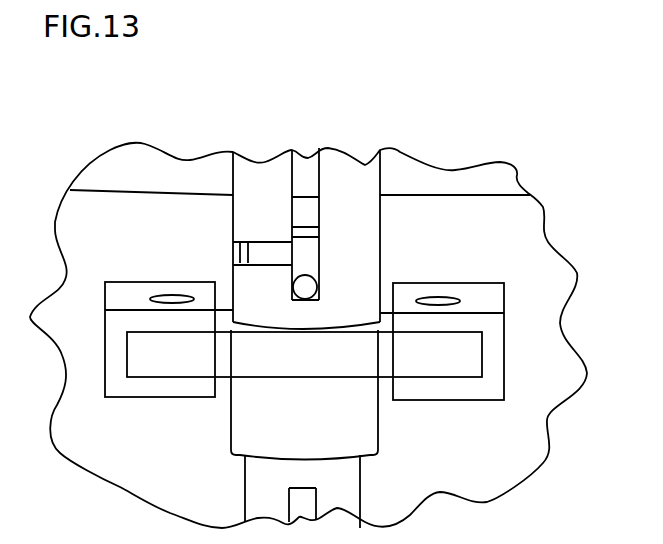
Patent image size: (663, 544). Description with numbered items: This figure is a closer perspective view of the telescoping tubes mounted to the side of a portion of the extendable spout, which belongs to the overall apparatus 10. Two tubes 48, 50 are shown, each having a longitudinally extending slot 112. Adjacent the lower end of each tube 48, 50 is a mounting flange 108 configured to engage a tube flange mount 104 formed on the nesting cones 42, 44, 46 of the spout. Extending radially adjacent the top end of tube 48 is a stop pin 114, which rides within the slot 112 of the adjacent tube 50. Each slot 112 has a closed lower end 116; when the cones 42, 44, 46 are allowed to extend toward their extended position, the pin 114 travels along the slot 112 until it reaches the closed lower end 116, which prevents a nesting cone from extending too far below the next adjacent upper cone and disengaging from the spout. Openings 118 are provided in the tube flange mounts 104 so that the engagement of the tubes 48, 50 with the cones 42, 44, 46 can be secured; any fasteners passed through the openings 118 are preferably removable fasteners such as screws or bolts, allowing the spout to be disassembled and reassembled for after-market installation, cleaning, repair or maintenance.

The device 10 is at (655, 383).
The cone 42 is at (342, 335).
The cone 44 is at (342, 335).
The cone 46 is at (517, 232).
The tube 48 is at (340, 498).
The tube 50 is at (345, 183).
The tube flange mount 104 is at (105, 320).
The mounting flange 108 is at (160, 357).
The slot 112 is at (305, 173).
The stop pin 114 is at (305, 287).
The closed lower end 116 is at (308, 318).
The opening 118 is at (172, 299).